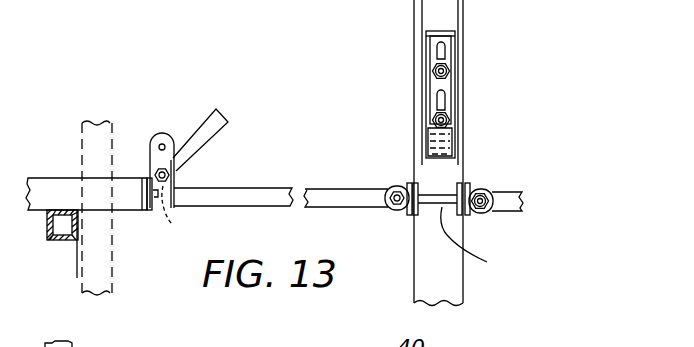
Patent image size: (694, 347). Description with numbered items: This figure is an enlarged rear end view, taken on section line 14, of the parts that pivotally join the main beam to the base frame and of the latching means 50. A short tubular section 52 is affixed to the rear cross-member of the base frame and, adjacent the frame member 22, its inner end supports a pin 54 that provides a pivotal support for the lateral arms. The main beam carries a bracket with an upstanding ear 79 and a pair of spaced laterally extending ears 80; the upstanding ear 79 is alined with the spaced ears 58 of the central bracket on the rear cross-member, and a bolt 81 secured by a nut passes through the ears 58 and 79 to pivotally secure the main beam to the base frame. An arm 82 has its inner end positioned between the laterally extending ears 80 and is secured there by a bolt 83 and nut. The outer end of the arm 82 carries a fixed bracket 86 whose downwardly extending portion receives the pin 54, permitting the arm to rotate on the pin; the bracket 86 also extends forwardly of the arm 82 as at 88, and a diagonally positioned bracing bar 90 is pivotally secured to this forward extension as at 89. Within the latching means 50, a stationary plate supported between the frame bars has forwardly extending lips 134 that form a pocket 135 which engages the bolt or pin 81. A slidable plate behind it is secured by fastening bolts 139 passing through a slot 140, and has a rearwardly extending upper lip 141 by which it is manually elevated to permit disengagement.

The section line 14- 14 is at (325, 104).
The frame member 22 is at (52, 242).
The latching means 50 is at (402, 21).
The short tubular section 52 is at (70, 163).
The pin 54 is at (173, 211).
The spaced ears 58 is at (447, 212).
The upstanding ear 79 is at (410, 218).
The laterally extending ears 80 is at (389, 202).
The bolt 81 is at (475, 242).
The arm 82 is at (262, 188).
The bolt 83 is at (393, 210).
The bracket 86 is at (147, 212).
The forward extension 88 is at (150, 158).
The pivotal securement 89 is at (176, 173).
The diagonally positioned bracing bar 90 is at (222, 134).
The upper lip 134 is at (430, 134).
The pocket 135 is at (432, 144).
The fastening bolt 139 is at (432, 70).
The slot 140 is at (443, 50).
The upper lip 141 is at (443, 31).